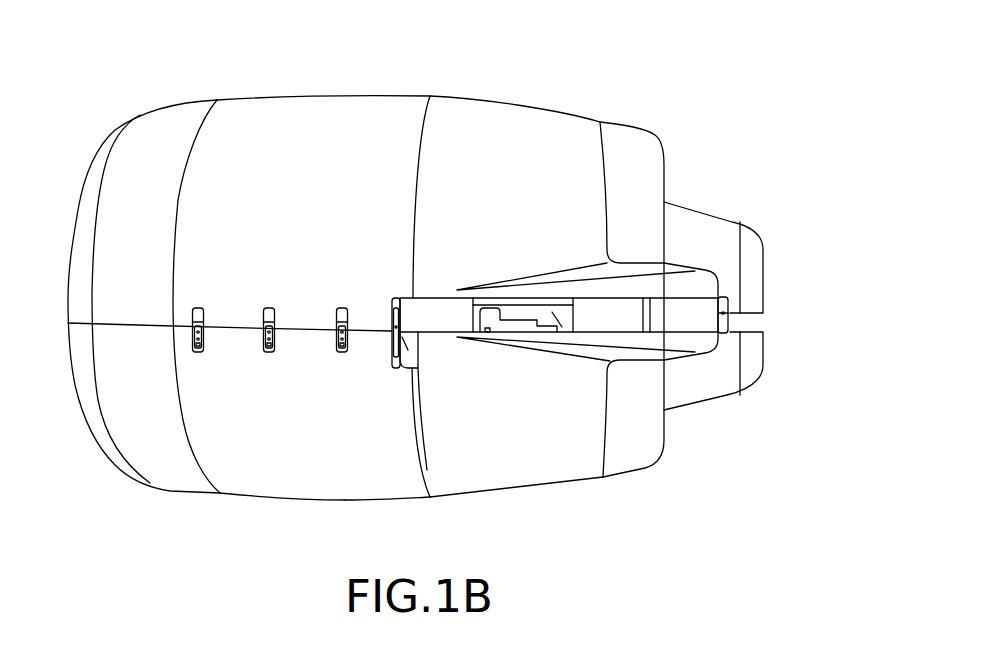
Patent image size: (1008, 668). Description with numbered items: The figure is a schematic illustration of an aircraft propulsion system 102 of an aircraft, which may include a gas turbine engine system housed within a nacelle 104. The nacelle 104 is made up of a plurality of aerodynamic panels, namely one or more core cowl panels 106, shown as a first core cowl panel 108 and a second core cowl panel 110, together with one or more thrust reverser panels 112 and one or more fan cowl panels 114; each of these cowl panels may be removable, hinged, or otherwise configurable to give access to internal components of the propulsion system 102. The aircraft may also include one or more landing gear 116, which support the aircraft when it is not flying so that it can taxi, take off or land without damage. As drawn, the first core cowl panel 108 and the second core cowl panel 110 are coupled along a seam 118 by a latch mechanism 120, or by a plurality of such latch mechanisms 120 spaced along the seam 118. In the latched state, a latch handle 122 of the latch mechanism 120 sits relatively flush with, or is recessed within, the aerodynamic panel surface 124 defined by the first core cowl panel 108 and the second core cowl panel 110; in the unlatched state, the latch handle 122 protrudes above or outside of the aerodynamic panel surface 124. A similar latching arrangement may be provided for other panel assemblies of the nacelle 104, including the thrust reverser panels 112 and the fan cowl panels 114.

The aircraft propulsion system 102 is at (103, 113).
The nacelle 104 is at (243, 98).
The core cowl panels 106 is at (233, 486).
The first core cowl panel 108 is at (308, 488).
The second core cowl panel 110 is at (327, 102).
The thrust reverser panels 112 is at (525, 483).
The fan cowl panels 114 is at (158, 481).
The landing gear 116 is at (555, 333).
The seam 118 is at (305, 331).
The latch mechanism 120 is at (268, 306).
The latch handle 122 is at (275, 310).
The aerodynamic panel surface 124 is at (210, 190).